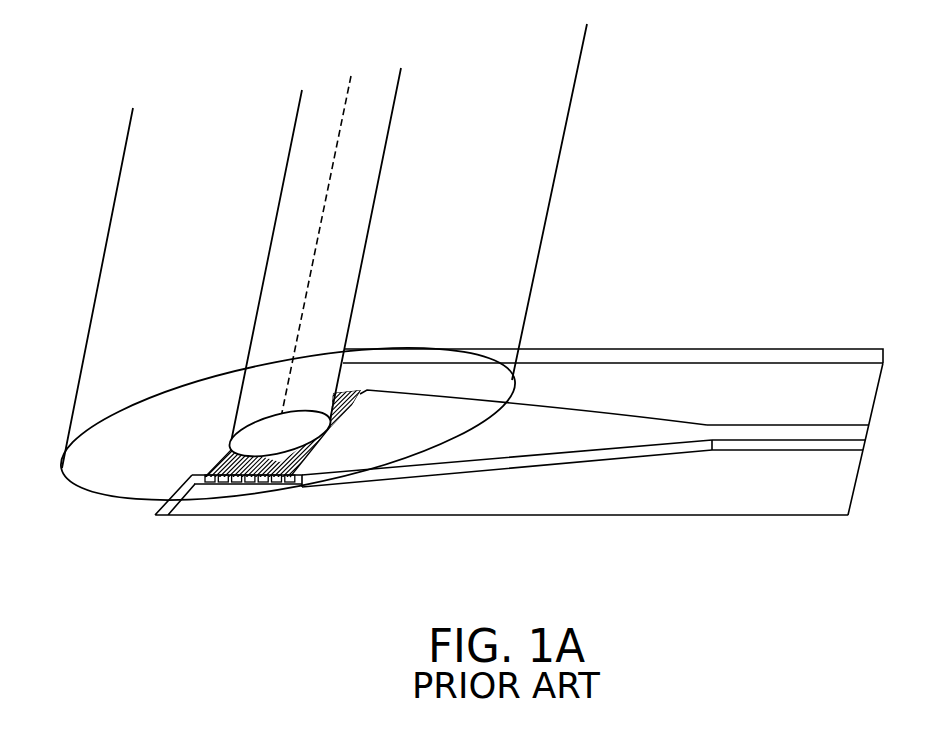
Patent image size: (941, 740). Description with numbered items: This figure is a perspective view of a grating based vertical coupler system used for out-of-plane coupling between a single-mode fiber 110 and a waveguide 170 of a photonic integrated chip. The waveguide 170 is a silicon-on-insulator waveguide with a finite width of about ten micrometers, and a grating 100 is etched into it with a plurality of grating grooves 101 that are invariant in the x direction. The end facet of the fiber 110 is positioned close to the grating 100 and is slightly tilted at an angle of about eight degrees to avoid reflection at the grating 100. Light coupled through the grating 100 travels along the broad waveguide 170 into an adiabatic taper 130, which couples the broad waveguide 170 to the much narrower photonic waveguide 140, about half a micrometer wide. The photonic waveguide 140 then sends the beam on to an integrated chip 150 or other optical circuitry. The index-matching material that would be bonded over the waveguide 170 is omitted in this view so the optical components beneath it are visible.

The grating 100 is at (228, 484).
The grating grooves 101 is at (267, 484).
The single-mode fiber 110 is at (543, 142).
The adiabatic taper 130 is at (537, 420).
The photonic waveguide 140 is at (788, 403).
The integrated chip 150 is at (850, 432).
The waveguide 170 is at (301, 485).